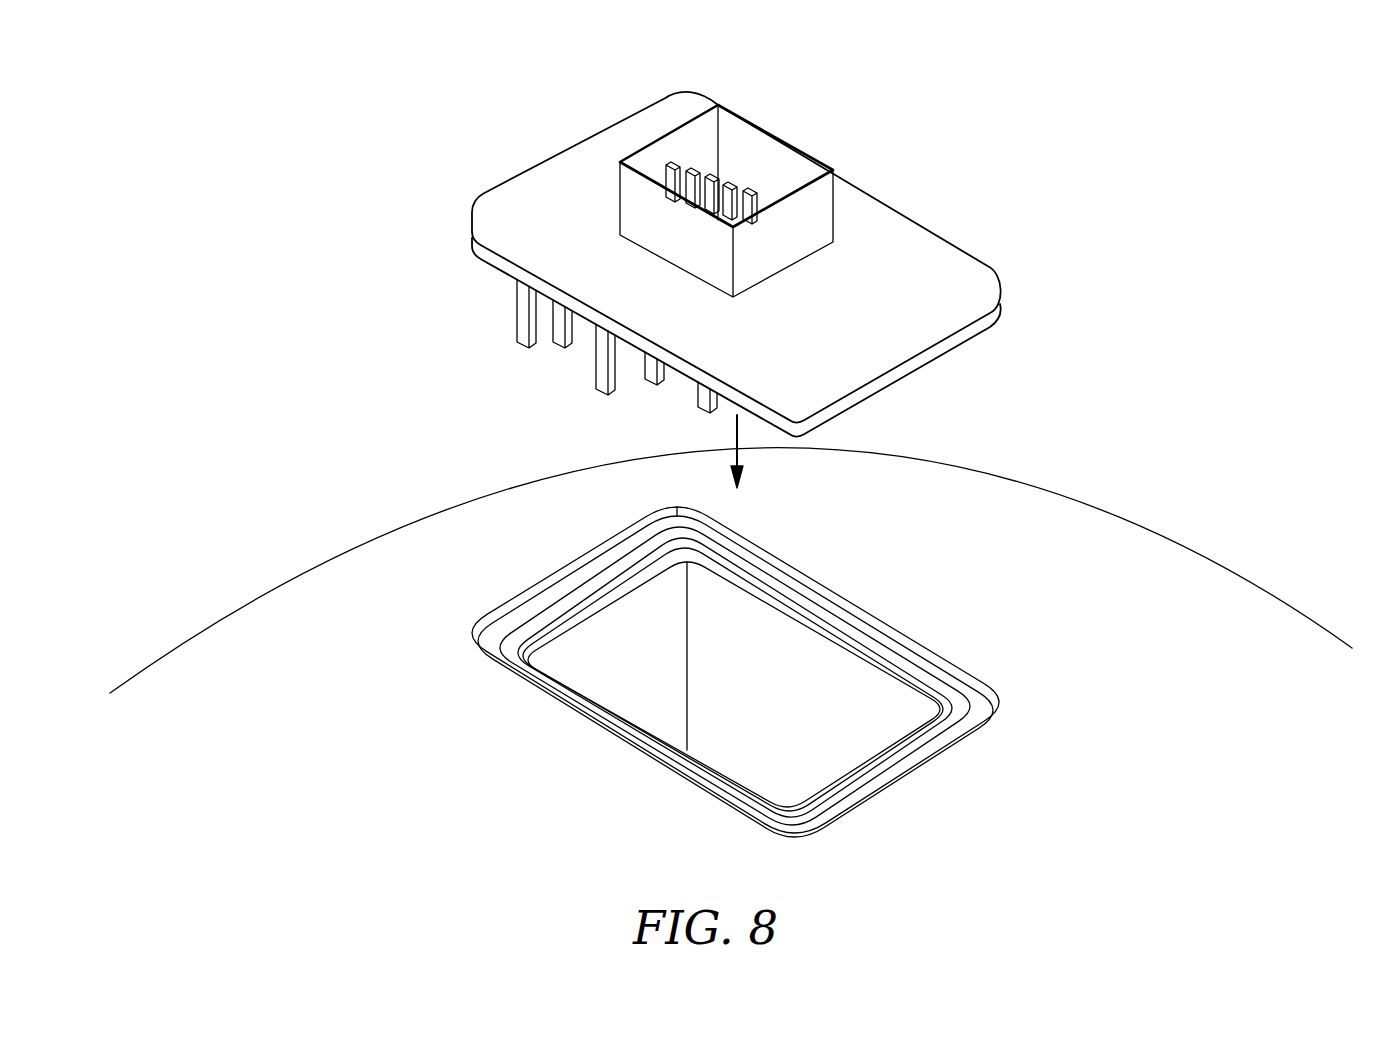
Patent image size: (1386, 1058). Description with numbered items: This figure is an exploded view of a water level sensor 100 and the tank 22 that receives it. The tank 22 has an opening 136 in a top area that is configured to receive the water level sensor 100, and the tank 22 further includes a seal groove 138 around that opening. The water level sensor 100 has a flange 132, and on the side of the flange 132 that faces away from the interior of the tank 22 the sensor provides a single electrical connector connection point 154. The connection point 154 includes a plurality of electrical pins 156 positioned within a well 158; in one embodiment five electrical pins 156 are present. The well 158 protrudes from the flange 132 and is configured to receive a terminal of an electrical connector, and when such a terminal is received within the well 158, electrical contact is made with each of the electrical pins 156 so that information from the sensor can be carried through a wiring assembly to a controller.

The tank 22 is at (1100, 523).
The water level sensor 100 is at (991, 284).
The flange 132 is at (947, 252).
The opening 136 is at (874, 757).
The seal groove 138 is at (512, 641).
The electrical connector connection point 154 is at (797, 177).
The electrical pins 156 is at (675, 161).
The well 158 is at (743, 134).